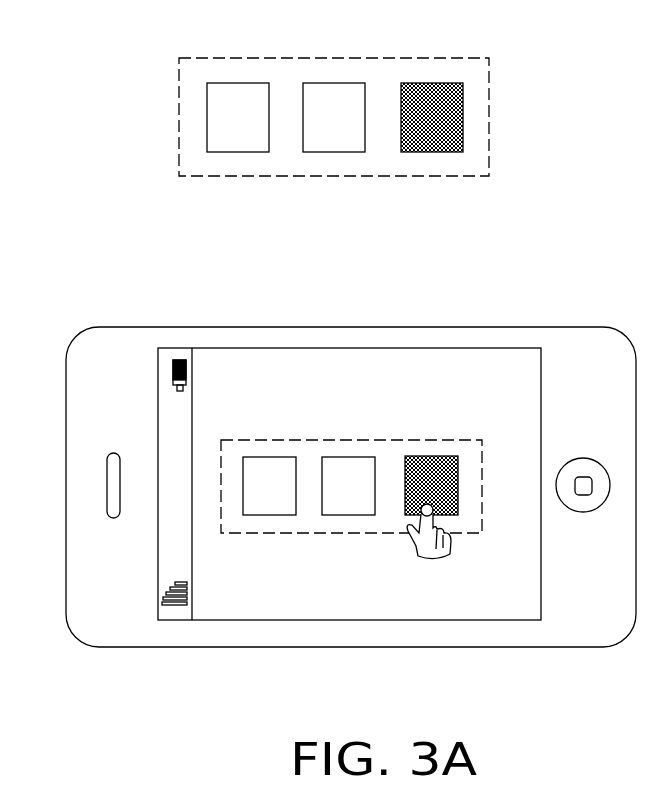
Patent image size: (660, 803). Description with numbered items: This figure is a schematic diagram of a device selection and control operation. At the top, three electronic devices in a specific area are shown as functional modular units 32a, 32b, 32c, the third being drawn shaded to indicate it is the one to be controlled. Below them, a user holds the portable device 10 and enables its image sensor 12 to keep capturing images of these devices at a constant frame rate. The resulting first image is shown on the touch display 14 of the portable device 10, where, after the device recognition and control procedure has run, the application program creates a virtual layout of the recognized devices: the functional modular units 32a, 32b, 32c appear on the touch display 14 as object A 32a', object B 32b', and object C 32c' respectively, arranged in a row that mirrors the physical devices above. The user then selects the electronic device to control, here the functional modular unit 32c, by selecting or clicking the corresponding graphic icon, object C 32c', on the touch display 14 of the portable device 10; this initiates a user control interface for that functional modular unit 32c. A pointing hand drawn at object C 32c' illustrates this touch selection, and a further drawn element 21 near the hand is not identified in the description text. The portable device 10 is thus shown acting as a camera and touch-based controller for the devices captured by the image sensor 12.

The portable device 10 is at (223, 647).
The image sensor 12 is at (583, 457).
The touch display 14 is at (495, 592).
The finger touch 21 is at (433, 547).
The functional modular unit 32a is at (198, 86).
The functional modular unit 32b is at (311, 82).
The functional modular unit 32c is at (471, 84).
The object A 32a' is at (207, 385).
The object B 32b' is at (342, 385).
The object C 32c' is at (433, 388).